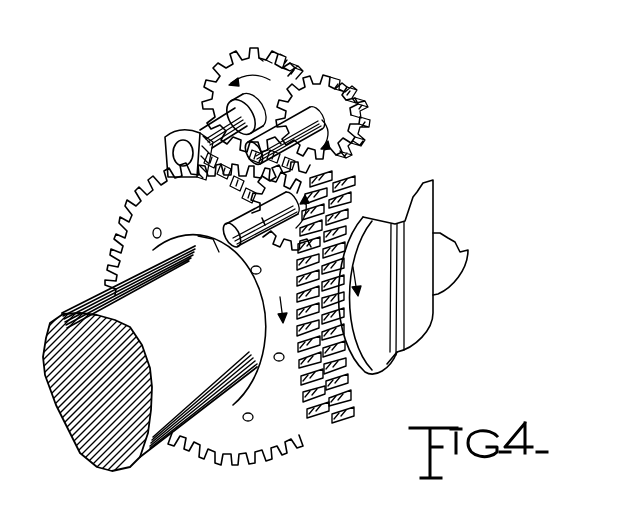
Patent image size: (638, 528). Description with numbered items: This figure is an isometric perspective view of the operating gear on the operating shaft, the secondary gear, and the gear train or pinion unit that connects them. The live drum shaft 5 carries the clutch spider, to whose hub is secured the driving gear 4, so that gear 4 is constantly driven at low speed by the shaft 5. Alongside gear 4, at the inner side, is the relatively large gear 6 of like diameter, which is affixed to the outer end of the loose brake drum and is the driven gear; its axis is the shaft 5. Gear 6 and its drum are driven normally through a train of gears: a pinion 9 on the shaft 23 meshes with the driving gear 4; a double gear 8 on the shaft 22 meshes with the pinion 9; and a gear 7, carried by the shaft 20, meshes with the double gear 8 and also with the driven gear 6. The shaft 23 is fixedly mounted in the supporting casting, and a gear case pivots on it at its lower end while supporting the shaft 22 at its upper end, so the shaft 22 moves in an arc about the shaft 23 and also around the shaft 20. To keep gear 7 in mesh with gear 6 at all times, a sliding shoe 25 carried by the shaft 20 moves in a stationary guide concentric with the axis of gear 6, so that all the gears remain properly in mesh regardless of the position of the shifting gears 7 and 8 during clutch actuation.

The gear 4 is at (273, 425).
The live drum shaft 5 is at (130, 447).
The gear 6 is at (343, 365).
The gear 7 is at (268, 80).
The double gear 8 is at (323, 105).
The pinion 9 is at (327, 187).
The shaft 20 is at (205, 122).
The shaft 22 is at (297, 130).
The shaft 23 is at (230, 240).
The sliding shoe 25 is at (163, 145).